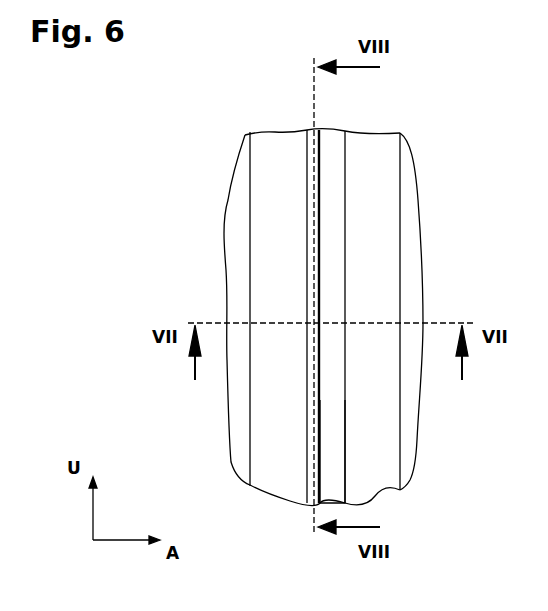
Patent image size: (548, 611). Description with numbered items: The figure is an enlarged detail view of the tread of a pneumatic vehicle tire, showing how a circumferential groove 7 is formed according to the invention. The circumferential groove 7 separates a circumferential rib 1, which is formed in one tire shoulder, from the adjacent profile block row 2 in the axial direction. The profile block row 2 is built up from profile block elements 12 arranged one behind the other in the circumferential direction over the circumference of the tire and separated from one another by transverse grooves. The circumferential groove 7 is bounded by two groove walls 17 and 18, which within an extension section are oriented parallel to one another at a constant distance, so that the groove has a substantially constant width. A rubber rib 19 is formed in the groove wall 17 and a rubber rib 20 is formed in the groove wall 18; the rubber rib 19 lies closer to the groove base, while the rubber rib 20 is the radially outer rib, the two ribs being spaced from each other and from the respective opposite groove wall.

The circumferential rib 1 is at (238, 260).
The profile block row 2 is at (410, 237).
The circumferential groove 7 is at (313, 130).
The profile block element 12 is at (408, 198).
The groove wall 17 is at (272, 220).
The groove wall 18 is at (372, 172).
The rubber rib 19 is at (317, 173).
The rubber rib 20 is at (328, 442).